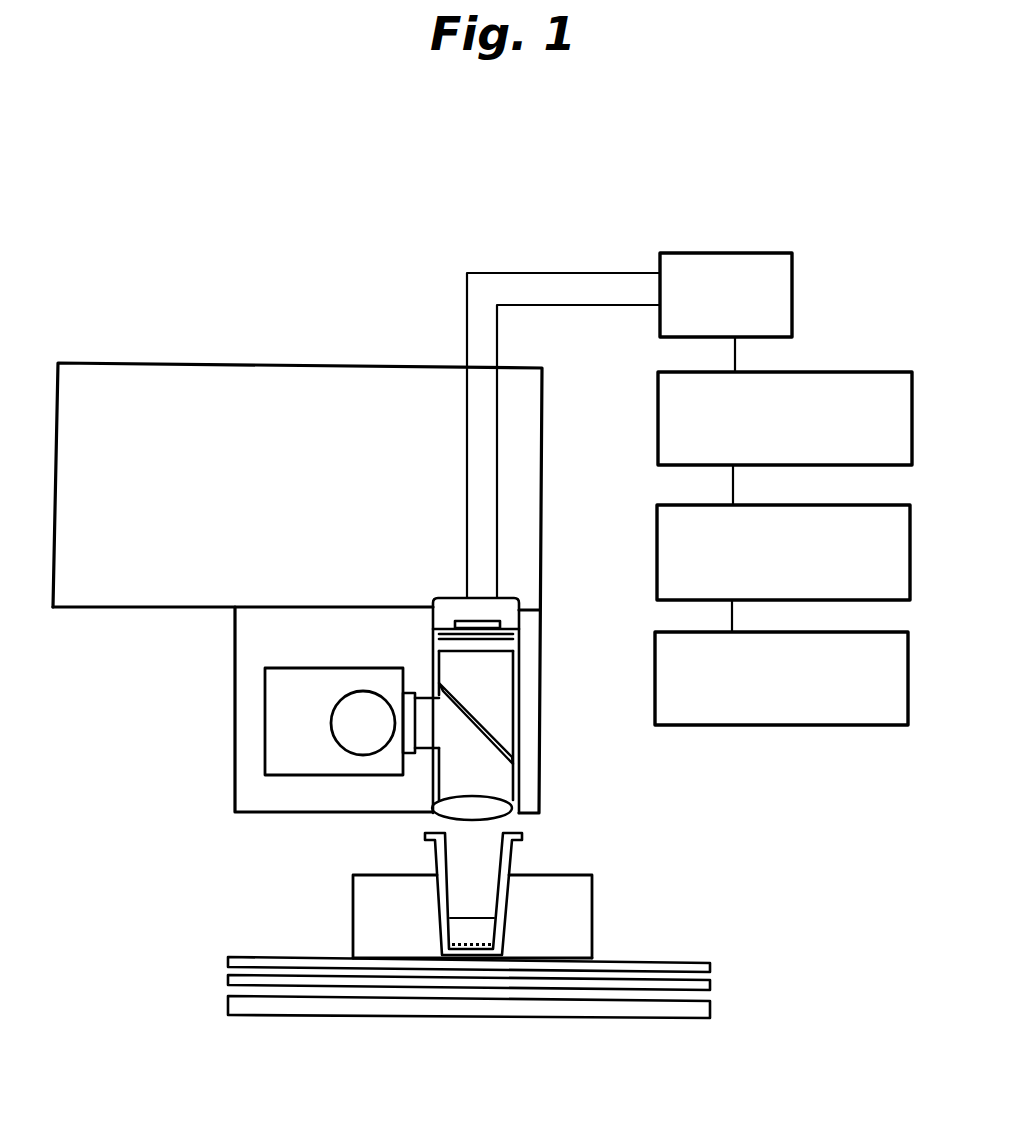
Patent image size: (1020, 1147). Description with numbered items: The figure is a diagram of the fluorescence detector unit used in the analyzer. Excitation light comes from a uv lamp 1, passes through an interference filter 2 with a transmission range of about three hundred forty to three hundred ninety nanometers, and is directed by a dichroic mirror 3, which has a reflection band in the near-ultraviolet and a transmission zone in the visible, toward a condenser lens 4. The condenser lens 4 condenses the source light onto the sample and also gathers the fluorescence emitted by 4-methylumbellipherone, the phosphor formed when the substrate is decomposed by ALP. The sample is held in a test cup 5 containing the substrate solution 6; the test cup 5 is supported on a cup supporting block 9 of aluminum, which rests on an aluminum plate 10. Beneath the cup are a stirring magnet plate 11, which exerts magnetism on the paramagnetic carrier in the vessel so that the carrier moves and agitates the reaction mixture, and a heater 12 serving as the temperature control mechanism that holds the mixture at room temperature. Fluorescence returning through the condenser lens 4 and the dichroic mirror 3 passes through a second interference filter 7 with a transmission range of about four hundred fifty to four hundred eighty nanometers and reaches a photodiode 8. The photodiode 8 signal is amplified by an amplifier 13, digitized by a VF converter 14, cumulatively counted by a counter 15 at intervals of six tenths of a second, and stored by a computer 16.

The uv lamp 1 is at (333, 723).
The interference filter 2 is at (403, 700).
The dichroic mirror 3 is at (490, 727).
The condenser lens 4 is at (490, 813).
The test cup 5 is at (515, 850).
The substrate solution 6 is at (470, 913).
The interference filter 7 is at (493, 657).
The photodiode 8 is at (507, 617).
The cup supporting block 9 is at (592, 913).
The aluminum plate 10 is at (712, 963).
The stirring magnet plate 11 is at (712, 986).
The heater 12 is at (712, 1010).
The amplifier 13 is at (726, 312).
The VF converter 14 is at (785, 438).
The counter 15 is at (783, 568).
The computer 16 is at (781, 678).